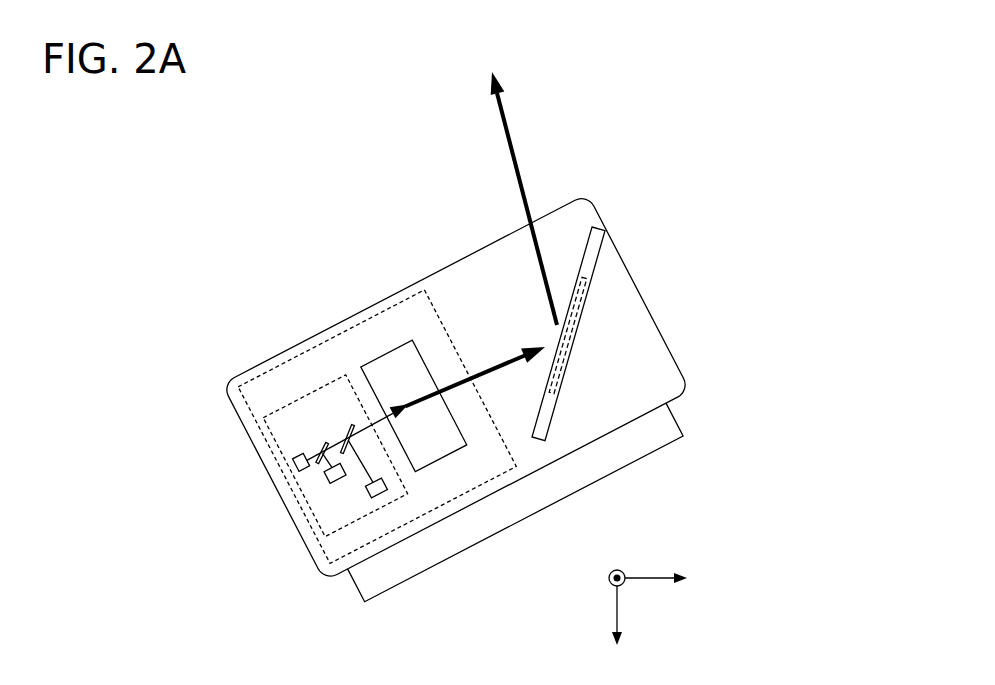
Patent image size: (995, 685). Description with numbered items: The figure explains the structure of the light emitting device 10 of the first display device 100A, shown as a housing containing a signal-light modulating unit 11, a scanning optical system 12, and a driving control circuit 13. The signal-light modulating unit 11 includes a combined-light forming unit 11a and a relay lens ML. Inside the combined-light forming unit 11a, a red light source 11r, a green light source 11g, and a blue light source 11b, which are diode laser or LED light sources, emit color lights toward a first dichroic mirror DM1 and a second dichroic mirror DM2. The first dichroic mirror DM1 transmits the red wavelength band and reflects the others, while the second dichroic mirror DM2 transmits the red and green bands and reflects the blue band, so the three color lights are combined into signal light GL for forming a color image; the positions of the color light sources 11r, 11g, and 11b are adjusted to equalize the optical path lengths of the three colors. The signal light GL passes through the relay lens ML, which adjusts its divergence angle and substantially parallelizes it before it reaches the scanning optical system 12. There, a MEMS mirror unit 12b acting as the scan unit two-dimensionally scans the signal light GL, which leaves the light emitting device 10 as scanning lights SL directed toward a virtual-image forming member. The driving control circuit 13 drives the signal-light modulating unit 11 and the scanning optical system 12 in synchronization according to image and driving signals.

The first display device 100A is at (340, 113).
The light emitting device 10 is at (335, 186).
The signal-light modulating unit 11 is at (377, 426).
The combined-light forming unit 11a is at (335, 456).
The red light source 11r is at (301, 462).
The green light source 11g is at (335, 473).
The blue light source 11b is at (376, 488).
The first dichroic mirror DM1 is at (322, 453).
The second dichroic mirror DM2 is at (347, 439).
The relay lens ML is at (414, 405).
The signal light GL is at (425, 402).
The scanning optical system 12 is at (584, 202).
The MEMS mirror unit 12b is at (559, 266).
The scanning lights SL is at (503, 141).
The driving control circuit 13 is at (516, 502).